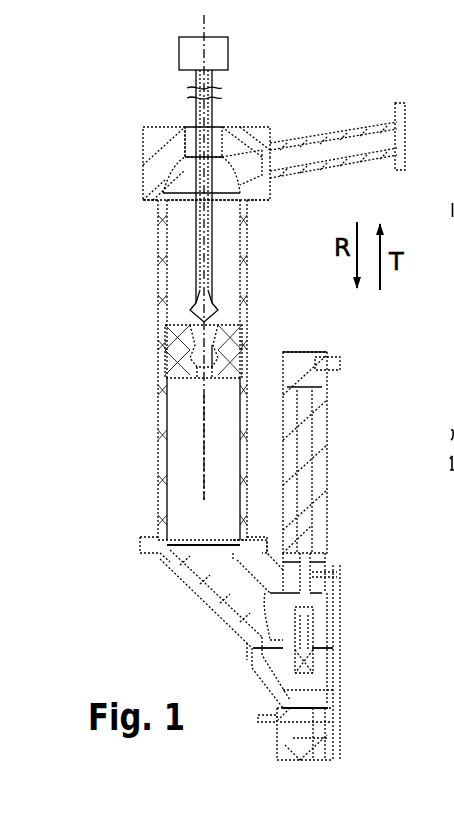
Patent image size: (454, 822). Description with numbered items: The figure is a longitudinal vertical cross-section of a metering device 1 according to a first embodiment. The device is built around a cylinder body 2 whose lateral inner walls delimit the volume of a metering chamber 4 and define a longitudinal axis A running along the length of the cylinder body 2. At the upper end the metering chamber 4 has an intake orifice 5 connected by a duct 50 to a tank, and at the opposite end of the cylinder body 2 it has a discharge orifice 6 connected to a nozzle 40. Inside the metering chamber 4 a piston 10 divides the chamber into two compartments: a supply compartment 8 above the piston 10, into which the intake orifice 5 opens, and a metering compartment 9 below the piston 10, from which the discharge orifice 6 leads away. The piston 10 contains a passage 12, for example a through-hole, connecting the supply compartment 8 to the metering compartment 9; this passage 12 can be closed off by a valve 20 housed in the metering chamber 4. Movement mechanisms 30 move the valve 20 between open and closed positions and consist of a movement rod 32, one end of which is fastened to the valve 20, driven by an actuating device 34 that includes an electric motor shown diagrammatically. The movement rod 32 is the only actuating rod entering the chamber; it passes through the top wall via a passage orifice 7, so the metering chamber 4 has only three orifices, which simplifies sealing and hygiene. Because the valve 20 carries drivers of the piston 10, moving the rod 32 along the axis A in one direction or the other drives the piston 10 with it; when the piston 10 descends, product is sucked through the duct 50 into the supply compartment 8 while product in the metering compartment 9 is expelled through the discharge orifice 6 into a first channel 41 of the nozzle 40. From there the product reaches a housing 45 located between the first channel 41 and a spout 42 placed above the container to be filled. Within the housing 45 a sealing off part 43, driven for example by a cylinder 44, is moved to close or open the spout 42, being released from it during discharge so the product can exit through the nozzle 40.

The metering device 1 is at (90, 150).
The cylinder body 2 is at (248, 250).
The metering chamber 4 is at (235, 282).
The intake orifice 5 is at (238, 160).
The discharge orifice 6 is at (198, 547).
The passage orifice 7 is at (204, 151).
The supply compartment 8 is at (165, 242).
The metering compartment 9 is at (185, 505).
The piston 10 is at (172, 345).
The passage 12 is at (224, 345).
The valve 20 is at (185, 315).
The movement mechanisms 30 is at (176, 98).
The movement rod 32 is at (200, 265).
The actuating device 34 is at (180, 50).
The nozzle 40 is at (350, 612).
The first channel 41 is at (245, 600).
The spout 42 is at (305, 748).
The sealing off part 43 is at (305, 652).
The cylinder 44 is at (300, 435).
The housing 45 is at (310, 678).
The duct 50 is at (290, 155).
The longitudinal axis A is at (210, 410).